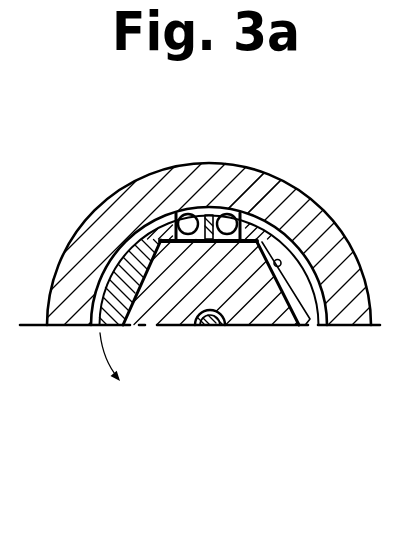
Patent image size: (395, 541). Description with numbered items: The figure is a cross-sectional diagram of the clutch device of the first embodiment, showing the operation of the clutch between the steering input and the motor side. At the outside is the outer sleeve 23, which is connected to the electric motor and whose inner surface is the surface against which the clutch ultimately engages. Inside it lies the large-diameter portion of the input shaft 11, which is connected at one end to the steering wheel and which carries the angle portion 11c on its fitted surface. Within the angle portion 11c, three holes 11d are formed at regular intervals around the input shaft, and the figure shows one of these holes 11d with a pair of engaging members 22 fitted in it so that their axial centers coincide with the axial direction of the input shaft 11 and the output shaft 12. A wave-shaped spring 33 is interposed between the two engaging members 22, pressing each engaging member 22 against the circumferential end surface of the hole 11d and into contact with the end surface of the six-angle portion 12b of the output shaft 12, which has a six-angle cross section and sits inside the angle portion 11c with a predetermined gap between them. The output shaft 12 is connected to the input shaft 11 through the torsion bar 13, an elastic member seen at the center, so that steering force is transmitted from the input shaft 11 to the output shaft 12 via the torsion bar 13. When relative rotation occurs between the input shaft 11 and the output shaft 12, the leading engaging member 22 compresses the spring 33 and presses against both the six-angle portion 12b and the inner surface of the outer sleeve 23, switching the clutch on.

The input shaft 11 is at (83, 325).
The angle portion 11c is at (141, 284).
The holes 11d is at (177, 211).
The output shaft 12 is at (288, 312).
The six-angle portion 12b is at (277, 268).
The torsion bar 13 is at (212, 326).
The engaging members 22 is at (181, 216).
The outer sleeve 23 is at (248, 183).
The wave-shaped spring 33 is at (211, 213).